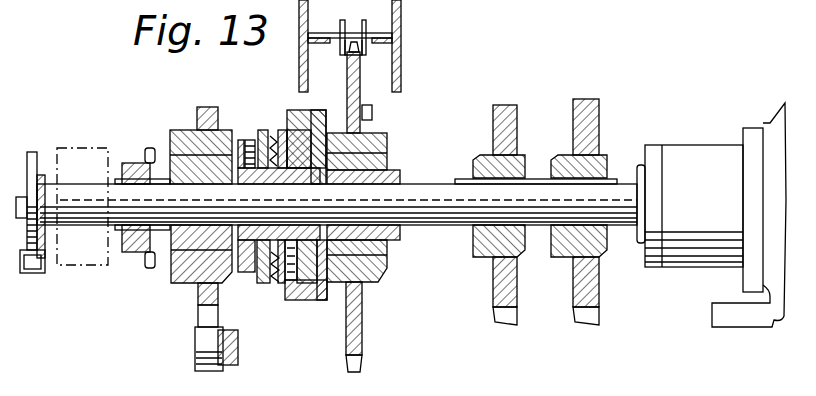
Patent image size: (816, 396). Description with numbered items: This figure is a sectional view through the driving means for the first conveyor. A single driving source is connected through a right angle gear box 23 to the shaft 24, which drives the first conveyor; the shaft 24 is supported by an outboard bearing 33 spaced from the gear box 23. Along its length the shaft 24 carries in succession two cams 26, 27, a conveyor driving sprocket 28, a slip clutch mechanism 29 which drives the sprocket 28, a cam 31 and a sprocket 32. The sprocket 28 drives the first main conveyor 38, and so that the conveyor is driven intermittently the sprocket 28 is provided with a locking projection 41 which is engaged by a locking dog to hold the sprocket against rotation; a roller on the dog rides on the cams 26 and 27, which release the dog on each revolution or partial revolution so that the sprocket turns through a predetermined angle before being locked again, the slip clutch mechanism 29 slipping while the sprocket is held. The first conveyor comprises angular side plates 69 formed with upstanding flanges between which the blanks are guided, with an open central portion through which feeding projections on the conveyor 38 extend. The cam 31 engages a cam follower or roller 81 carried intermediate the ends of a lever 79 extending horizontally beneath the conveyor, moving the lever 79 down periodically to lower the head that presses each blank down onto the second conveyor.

The right angle gear box 23 is at (770, 123).
The shaft 24 is at (423, 225).
The cam 26 is at (592, 100).
The cam 27 is at (502, 105).
The conveyor driving sprocket 28 is at (362, 330).
The slip clutch mechanism 29 is at (291, 311).
The cam 31 is at (198, 295).
The sprocket 32 is at (135, 163).
The outboard bearing 33 is at (32, 160).
The first main conveyor 38 is at (362, 55).
The locking projection 41 is at (372, 113).
The angular side plate 69 is at (299, 68).
The lever 79 is at (238, 355).
The cam follower or roller 81 is at (195, 366).